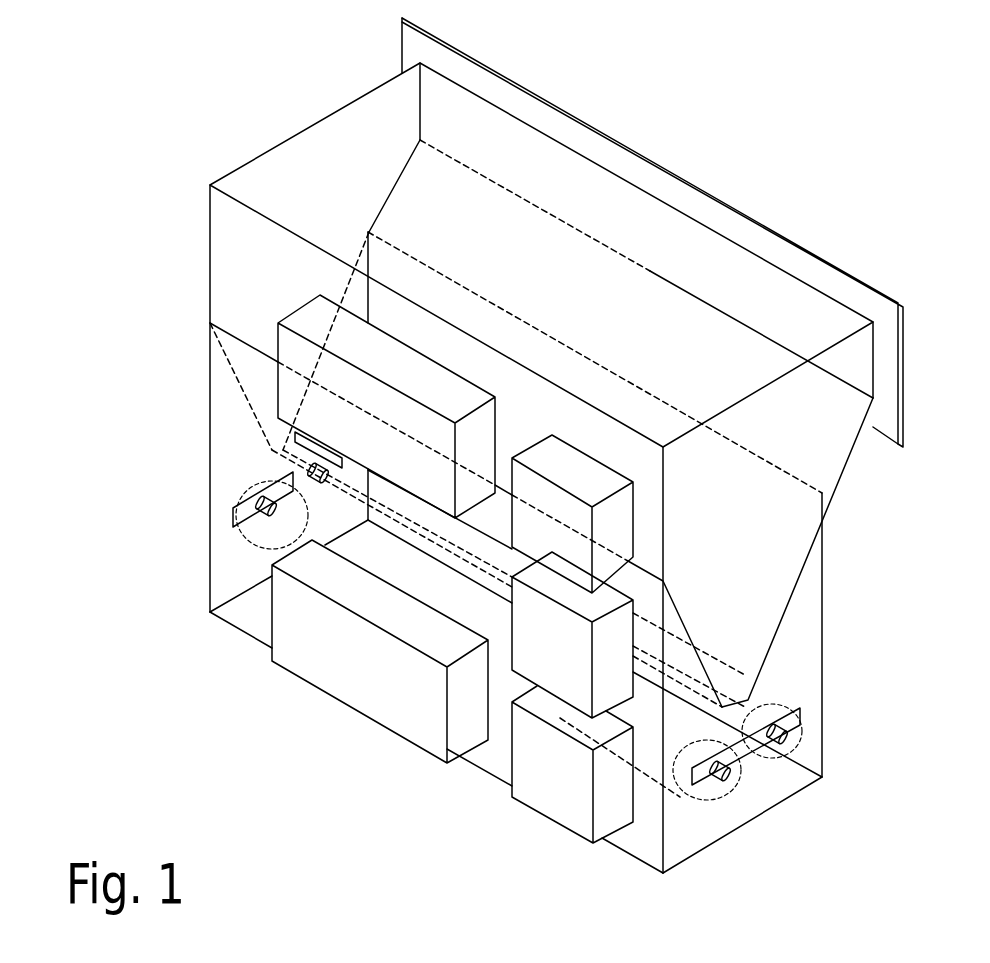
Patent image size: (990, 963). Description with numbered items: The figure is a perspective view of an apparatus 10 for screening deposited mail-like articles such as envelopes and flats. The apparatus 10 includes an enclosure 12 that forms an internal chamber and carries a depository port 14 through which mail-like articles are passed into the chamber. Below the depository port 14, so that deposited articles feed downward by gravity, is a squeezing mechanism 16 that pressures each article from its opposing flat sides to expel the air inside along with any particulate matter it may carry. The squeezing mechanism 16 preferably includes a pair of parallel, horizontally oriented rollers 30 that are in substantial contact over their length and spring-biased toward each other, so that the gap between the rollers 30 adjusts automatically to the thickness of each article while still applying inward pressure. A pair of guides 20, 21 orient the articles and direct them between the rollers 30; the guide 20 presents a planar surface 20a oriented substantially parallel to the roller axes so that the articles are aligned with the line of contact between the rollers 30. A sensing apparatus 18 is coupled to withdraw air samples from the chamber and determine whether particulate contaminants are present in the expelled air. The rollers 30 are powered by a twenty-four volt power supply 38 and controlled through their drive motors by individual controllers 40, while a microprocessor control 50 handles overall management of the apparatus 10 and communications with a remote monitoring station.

The apparatus 10 is at (214, 107).
The enclosure 12 is at (382, 83).
The depository port 14 is at (742, 186).
The squeezing mechanism 16 is at (776, 784).
The sensing apparatus 18 is at (370, 398).
The guide 20 is at (777, 610).
The planar surface 20a is at (750, 560).
The guide 21 is at (722, 706).
The rollers 30 is at (776, 748).
The power supply 38 is at (383, 672).
The controllers 40 is at (577, 673).
The microprocessor control 50 is at (578, 478).